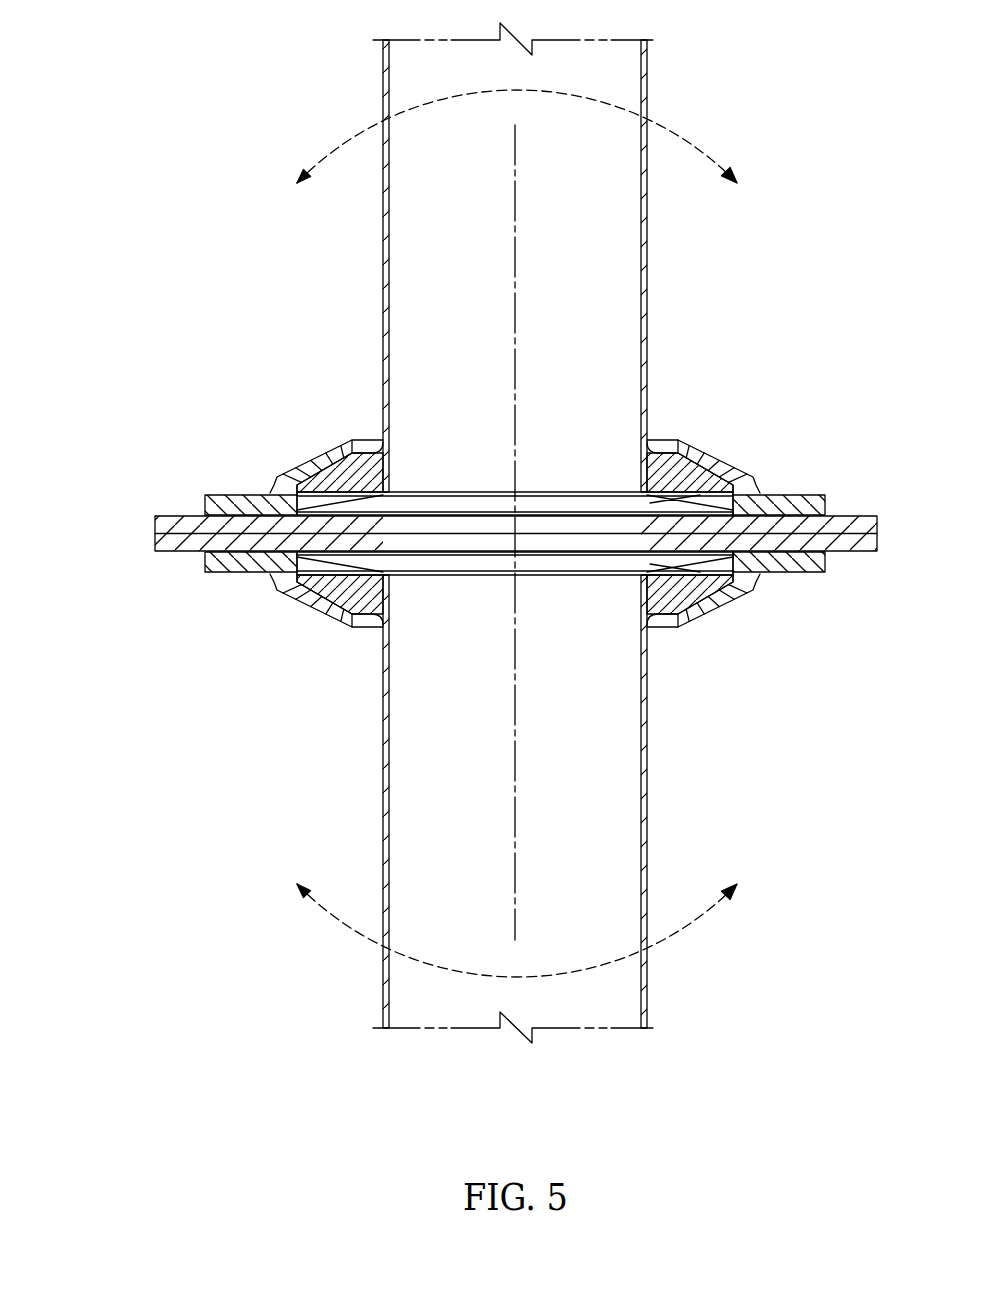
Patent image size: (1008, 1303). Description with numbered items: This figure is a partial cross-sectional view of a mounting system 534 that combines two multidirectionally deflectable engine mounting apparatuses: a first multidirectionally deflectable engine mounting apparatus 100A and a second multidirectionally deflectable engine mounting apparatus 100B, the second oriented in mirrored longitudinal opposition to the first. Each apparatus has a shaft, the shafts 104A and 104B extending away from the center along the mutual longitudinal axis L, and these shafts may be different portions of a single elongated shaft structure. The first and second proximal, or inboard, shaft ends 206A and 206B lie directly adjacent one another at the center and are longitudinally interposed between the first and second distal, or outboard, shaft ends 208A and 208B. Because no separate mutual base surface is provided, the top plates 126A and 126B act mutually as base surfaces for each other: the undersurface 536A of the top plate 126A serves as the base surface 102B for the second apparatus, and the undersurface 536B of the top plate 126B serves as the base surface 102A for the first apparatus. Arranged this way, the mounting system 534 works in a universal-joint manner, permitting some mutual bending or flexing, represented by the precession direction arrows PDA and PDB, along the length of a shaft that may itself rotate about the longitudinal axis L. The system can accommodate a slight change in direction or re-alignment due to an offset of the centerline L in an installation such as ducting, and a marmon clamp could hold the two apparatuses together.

The first multidirectionally deflectable engine mounting apparatus 100A is at (230, 166).
The second multidirectionally deflectable engine mounting apparatus 100B is at (227, 901).
The shaft of first apparatus 104A is at (382, 268).
The shaft of second apparatus 104B is at (383, 810).
The first distal shaft end 208A is at (359, 66).
The second distal shaft end 208B is at (361, 1008).
The first proximal shaft end 206A is at (342, 408).
The second proximal shaft end 206B is at (342, 659).
The top plate of first apparatus 126A is at (234, 471).
The top plate of second apparatus 126B is at (234, 596).
The base surface for first apparatus 102A is at (437, 577).
The base surface for second apparatus 102B is at (437, 494).
The undersurface of top plate of first apparatus 536A is at (222, 540).
The undersurface of top plate of second apparatus 536B is at (170, 530).
The mounting system 534 is at (122, 448).
The longitudinal axis L is at (515, 235).
The precession direction arrow PDA is at (570, 97).
The precession direction arrow PDB is at (590, 967).